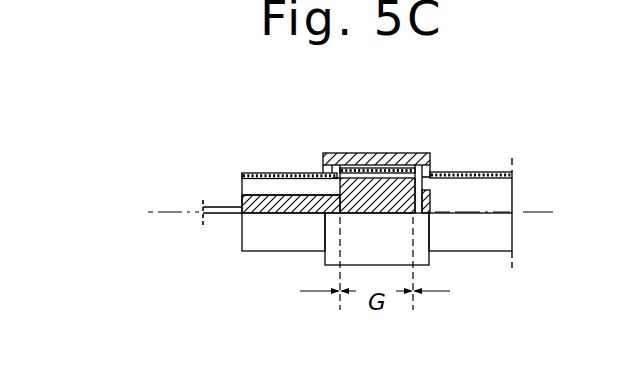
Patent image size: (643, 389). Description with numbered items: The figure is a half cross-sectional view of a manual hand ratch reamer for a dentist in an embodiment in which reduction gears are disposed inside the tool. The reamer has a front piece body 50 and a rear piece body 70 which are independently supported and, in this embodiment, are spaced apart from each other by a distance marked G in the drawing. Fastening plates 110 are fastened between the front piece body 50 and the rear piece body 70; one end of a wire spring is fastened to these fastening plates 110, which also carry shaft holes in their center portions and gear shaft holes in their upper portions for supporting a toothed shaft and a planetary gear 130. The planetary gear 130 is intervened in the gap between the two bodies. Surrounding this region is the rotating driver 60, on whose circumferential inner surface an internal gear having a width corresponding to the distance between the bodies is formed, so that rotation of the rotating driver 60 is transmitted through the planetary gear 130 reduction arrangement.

The front piece body 50 is at (265, 173).
The rotating driver 60 is at (419, 153).
The rear piece body 70 is at (471, 172).
The fastening plates 110 is at (441, 174).
The planetary gear 130 is at (343, 160).